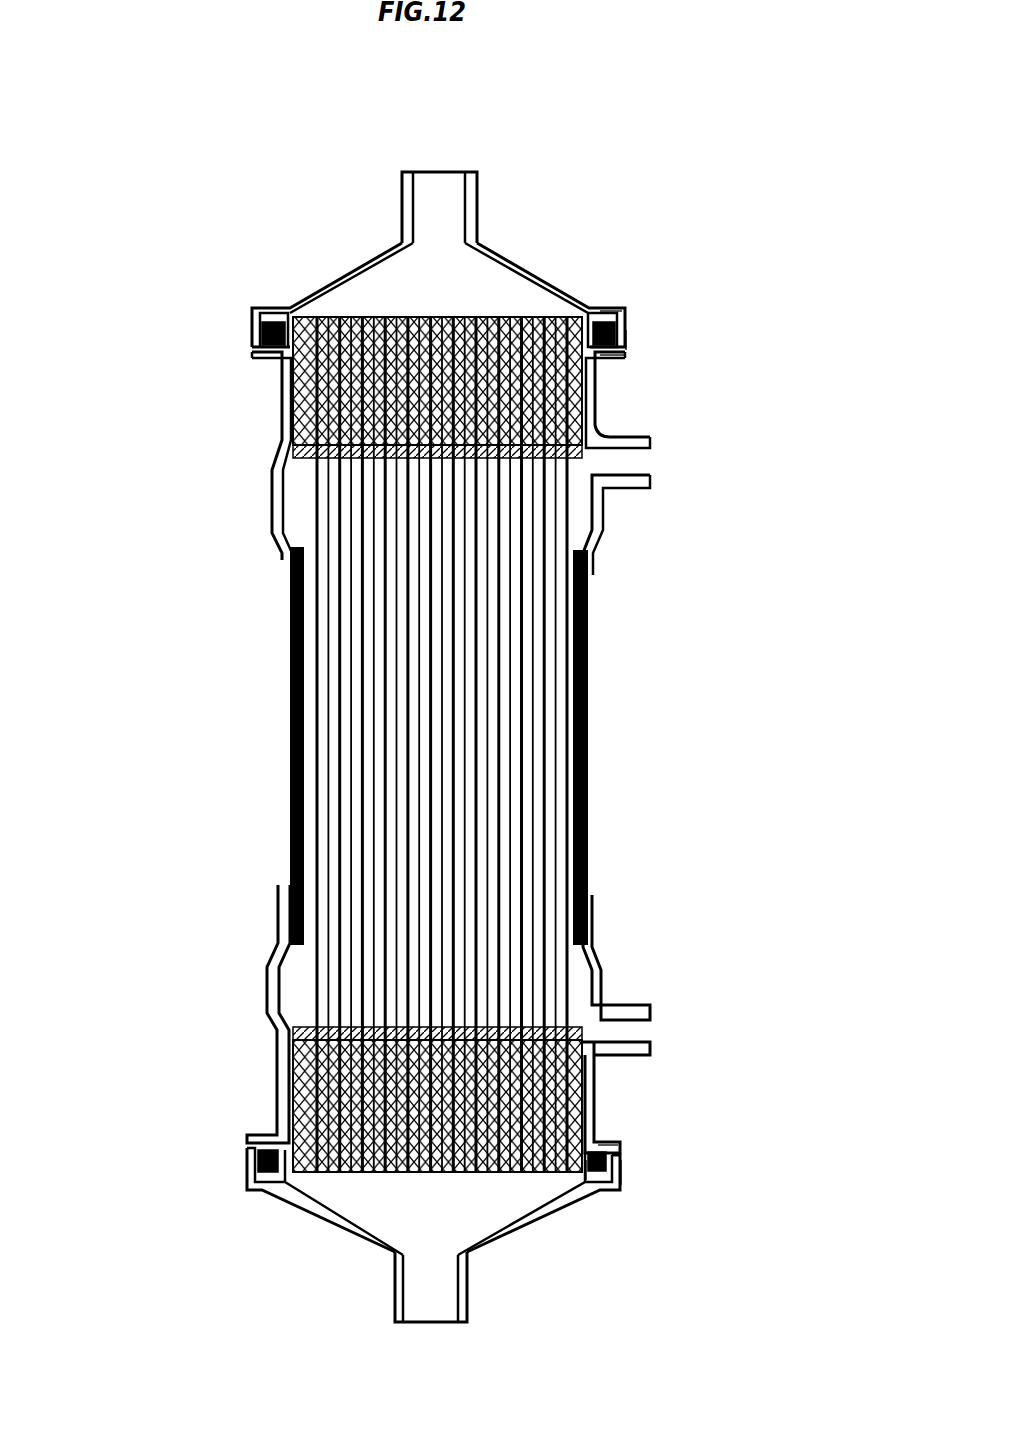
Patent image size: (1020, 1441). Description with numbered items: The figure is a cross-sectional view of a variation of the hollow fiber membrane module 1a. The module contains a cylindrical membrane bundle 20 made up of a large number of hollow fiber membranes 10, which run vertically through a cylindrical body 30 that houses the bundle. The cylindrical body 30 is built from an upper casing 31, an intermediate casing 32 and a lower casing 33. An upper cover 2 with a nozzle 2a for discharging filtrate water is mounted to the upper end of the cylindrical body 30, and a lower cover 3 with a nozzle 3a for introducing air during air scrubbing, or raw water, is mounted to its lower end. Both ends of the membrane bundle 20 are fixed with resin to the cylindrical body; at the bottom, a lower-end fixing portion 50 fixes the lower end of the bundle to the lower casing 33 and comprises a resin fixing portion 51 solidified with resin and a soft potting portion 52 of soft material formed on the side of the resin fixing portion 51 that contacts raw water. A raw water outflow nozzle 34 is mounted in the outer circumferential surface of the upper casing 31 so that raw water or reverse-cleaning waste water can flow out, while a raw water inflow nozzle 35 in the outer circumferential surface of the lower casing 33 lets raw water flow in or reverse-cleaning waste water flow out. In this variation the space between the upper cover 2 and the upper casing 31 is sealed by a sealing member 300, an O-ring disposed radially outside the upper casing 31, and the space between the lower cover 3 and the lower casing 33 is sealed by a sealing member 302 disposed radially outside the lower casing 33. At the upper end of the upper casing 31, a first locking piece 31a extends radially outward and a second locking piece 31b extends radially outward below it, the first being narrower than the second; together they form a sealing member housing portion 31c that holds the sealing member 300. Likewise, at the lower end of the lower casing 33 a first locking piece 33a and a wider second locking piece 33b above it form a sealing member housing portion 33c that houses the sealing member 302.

The hollow fiber membrane module 1a is at (668, 167).
The upper cover 2 is at (537, 275).
The nozzle 2a is at (477, 198).
The lower cover 3 is at (345, 1233).
The nozzle 3a is at (467, 1300).
The hollow fiber membranes 10 is at (316, 697).
The membrane bundle 20 is at (316, 506).
The cylindrical body 30 is at (238, 385).
The upper casing 31 is at (283, 400).
The first locking piece 31a is at (603, 320).
The second locking piece 31b is at (612, 357).
The sealing member housing portion 31c is at (632, 347).
The intermediate casing 32 is at (590, 713).
The lower casing 33 is at (593, 917).
The first locking piece 33a is at (597, 1180).
The second locking piece 33b is at (603, 1142).
The sealing member housing portion 33c is at (628, 1177).
The raw water outflow nozzle 34 is at (632, 495).
The raw water inflow nozzle 35 is at (632, 1003).
The lower-end fixing portion 50 is at (175, 1005).
The resin fixing portion 51 is at (293, 1086).
The soft potting portion 52 is at (293, 1029).
The sealing member (O-ring) 300 is at (610, 330).
The sealing member (O-ring) 302 is at (612, 1160).